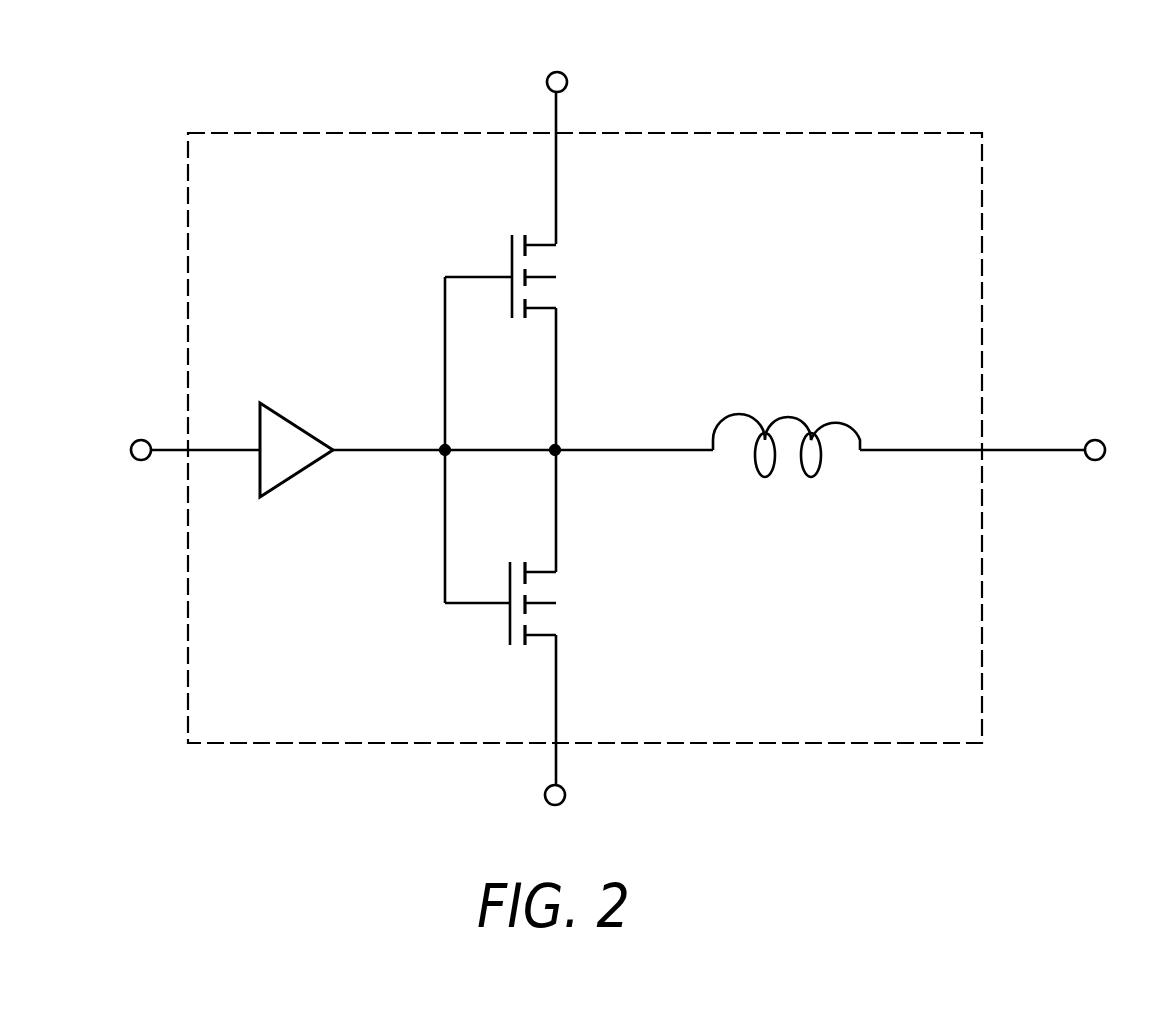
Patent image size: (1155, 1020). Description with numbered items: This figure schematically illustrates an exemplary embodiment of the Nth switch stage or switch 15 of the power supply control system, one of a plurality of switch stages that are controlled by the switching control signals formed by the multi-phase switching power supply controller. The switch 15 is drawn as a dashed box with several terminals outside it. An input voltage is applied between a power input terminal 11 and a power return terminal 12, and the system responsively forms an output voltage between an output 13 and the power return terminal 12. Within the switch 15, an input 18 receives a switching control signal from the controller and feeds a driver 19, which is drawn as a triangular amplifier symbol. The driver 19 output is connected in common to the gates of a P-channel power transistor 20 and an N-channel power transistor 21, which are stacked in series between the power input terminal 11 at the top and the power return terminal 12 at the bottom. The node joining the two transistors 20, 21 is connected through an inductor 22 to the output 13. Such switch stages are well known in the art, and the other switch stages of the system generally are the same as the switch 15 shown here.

The power input terminal 11 is at (567, 79).
The power return terminal 12 is at (567, 798).
The output 13 is at (1103, 442).
The Nth switch stage 15 is at (868, 803).
The input 18 is at (135, 460).
The driver 19 is at (283, 483).
The P-channel power transistor 20 is at (545, 290).
The N-channel power transistor 21 is at (550, 583).
The inductor 22 is at (792, 418).